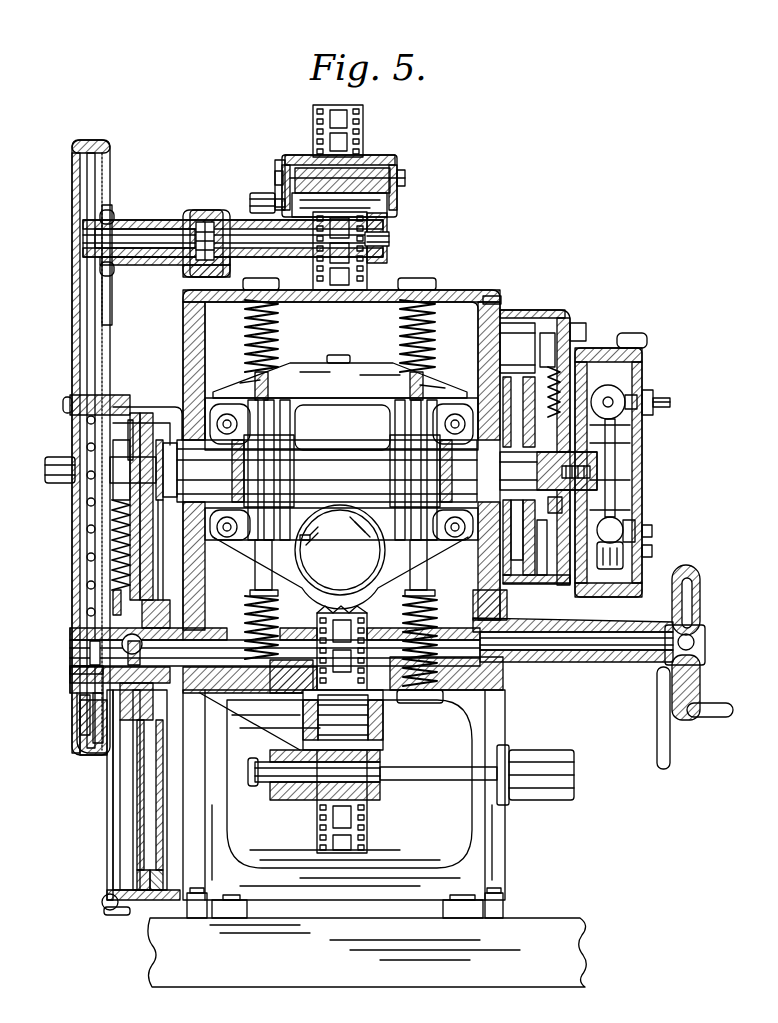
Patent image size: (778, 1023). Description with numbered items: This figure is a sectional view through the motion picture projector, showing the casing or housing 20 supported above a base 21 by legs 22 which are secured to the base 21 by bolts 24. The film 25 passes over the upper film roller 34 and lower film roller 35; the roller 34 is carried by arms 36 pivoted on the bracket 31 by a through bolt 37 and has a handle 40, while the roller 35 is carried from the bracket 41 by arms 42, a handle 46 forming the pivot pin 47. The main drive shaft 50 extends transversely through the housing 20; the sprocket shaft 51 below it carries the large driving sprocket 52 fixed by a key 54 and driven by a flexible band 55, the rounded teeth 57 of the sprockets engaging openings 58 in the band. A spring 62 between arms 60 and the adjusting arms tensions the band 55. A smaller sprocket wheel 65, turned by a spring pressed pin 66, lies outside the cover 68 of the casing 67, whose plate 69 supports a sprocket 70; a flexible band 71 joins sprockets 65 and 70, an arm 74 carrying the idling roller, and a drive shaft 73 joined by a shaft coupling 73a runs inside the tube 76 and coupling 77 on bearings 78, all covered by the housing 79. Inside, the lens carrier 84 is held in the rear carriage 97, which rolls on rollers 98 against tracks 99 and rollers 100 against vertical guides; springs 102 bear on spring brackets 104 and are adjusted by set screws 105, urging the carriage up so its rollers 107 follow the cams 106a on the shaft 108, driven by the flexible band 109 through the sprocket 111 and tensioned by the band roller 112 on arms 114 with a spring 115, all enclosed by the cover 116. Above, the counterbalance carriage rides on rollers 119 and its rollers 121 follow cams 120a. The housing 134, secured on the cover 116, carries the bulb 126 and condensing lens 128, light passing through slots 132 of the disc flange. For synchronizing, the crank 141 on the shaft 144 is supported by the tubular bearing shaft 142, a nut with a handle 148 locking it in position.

The casing or housing 20 is at (472, 288).
The base 21 is at (592, 955).
The legs 22 is at (502, 867).
The bolts 24 is at (498, 900).
The film 25 is at (363, 120).
The bracket 31 is at (385, 270).
The upper film roller 34 is at (375, 162).
The lower film roller 35 is at (355, 723).
The arms 36 is at (290, 163).
The through bolt 37 is at (405, 182).
The handle 40 is at (255, 200).
The bracket 41 is at (268, 733).
The arms 42 is at (375, 742).
The handle 46 is at (578, 780).
The pivot pin 47 is at (262, 790).
The drive shaft 50 is at (63, 485).
The sprocket shaft 51 is at (75, 648).
The driving sprocket 52 is at (130, 845).
The key 54 is at (88, 670).
The flexible band 55 is at (135, 905).
The rounded teeth 57 is at (152, 905).
The openings 58 is at (77, 360).
The arms 60 is at (168, 435).
The spring 62 is at (115, 535).
The sprocket wheel 65 is at (92, 733).
The spring pressed pin 66 is at (128, 700).
The casing 67 is at (108, 897).
The cover 68 is at (112, 793).
The plate 69 is at (108, 328).
The sprocket 70 is at (88, 198).
The flexible band 71 is at (90, 562).
The drive shaft 73 is at (125, 235).
The shaft coupling 73a is at (198, 212).
The arm 74 is at (250, 240).
The tube 76 is at (148, 258).
The coupling 77 is at (205, 270).
The bearings 78 is at (95, 243).
The housing 79 is at (75, 427).
The lens carrier 84 is at (316, 580).
The rear carriage 97 is at (330, 500).
The rollers 98 is at (220, 540).
The tracks or guides 99 is at (205, 612).
The rollers 100 is at (262, 500).
The springs 102 is at (272, 610).
The spring brackets 104 is at (268, 585).
The set screws 105 is at (440, 700).
The cams 106a is at (265, 470).
The rollers 107 is at (296, 530).
The shaft 108 is at (335, 455).
The flexible band 109 is at (530, 585).
The sprocket 111 is at (554, 562).
The band roller 112 is at (527, 330).
The arms 114 is at (562, 330).
The spring 115 is at (586, 340).
The cover 116 is at (520, 302).
The rollers 119 is at (230, 415).
The cams 120a is at (395, 436).
The rollers 121 is at (290, 400).
The bulb 126 is at (625, 394).
The condensing lens 128 is at (640, 537).
The slots or openings 132 is at (641, 470).
The housing 134 is at (650, 357).
The crank 141 is at (696, 662).
The tubular bearing shaft 142 is at (585, 660).
The shaft 144 is at (545, 655).
The handle 148 is at (666, 752).